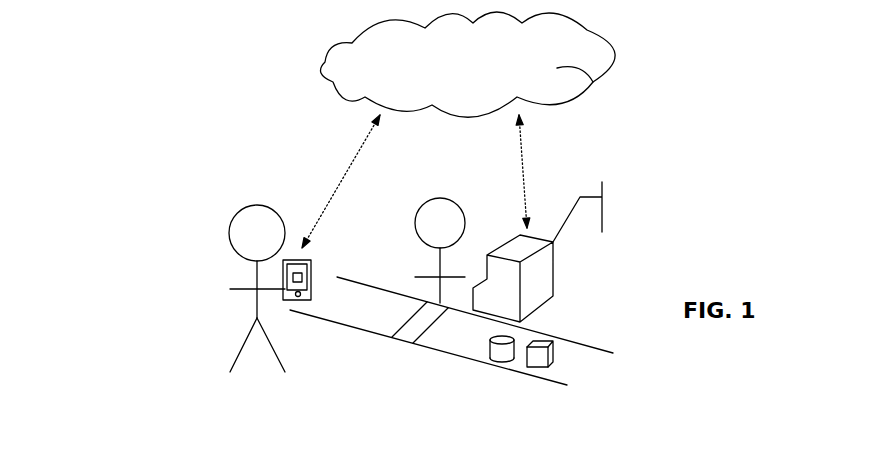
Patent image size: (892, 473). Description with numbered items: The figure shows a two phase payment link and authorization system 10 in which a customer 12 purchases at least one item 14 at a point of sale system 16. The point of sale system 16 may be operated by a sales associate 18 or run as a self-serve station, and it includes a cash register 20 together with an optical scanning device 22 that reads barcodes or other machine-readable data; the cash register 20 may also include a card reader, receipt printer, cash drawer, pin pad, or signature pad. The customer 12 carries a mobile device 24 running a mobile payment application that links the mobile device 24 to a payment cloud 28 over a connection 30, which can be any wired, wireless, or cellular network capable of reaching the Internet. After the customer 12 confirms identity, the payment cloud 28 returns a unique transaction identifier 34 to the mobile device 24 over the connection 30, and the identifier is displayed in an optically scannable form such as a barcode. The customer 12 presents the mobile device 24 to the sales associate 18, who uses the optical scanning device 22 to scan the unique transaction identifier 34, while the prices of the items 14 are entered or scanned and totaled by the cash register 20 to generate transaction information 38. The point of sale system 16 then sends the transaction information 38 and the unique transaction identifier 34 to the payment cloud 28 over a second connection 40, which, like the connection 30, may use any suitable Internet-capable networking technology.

The two phase payment link and authorization system 10 is at (100, 62).
The customer 12 is at (231, 236).
The item 14 is at (494, 358).
The point of sale system 16 is at (472, 180).
The sales associate 18 is at (424, 208).
The cash register 20 is at (556, 295).
The optical scanning device 22 is at (406, 337).
The mobile device 24 is at (320, 271).
The payment cloud 28 is at (464, 63).
The connection 30 is at (348, 170).
The unique transaction identifier 34 is at (303, 277).
The transaction information 38 is at (640, 212).
The connection 40 is at (522, 143).